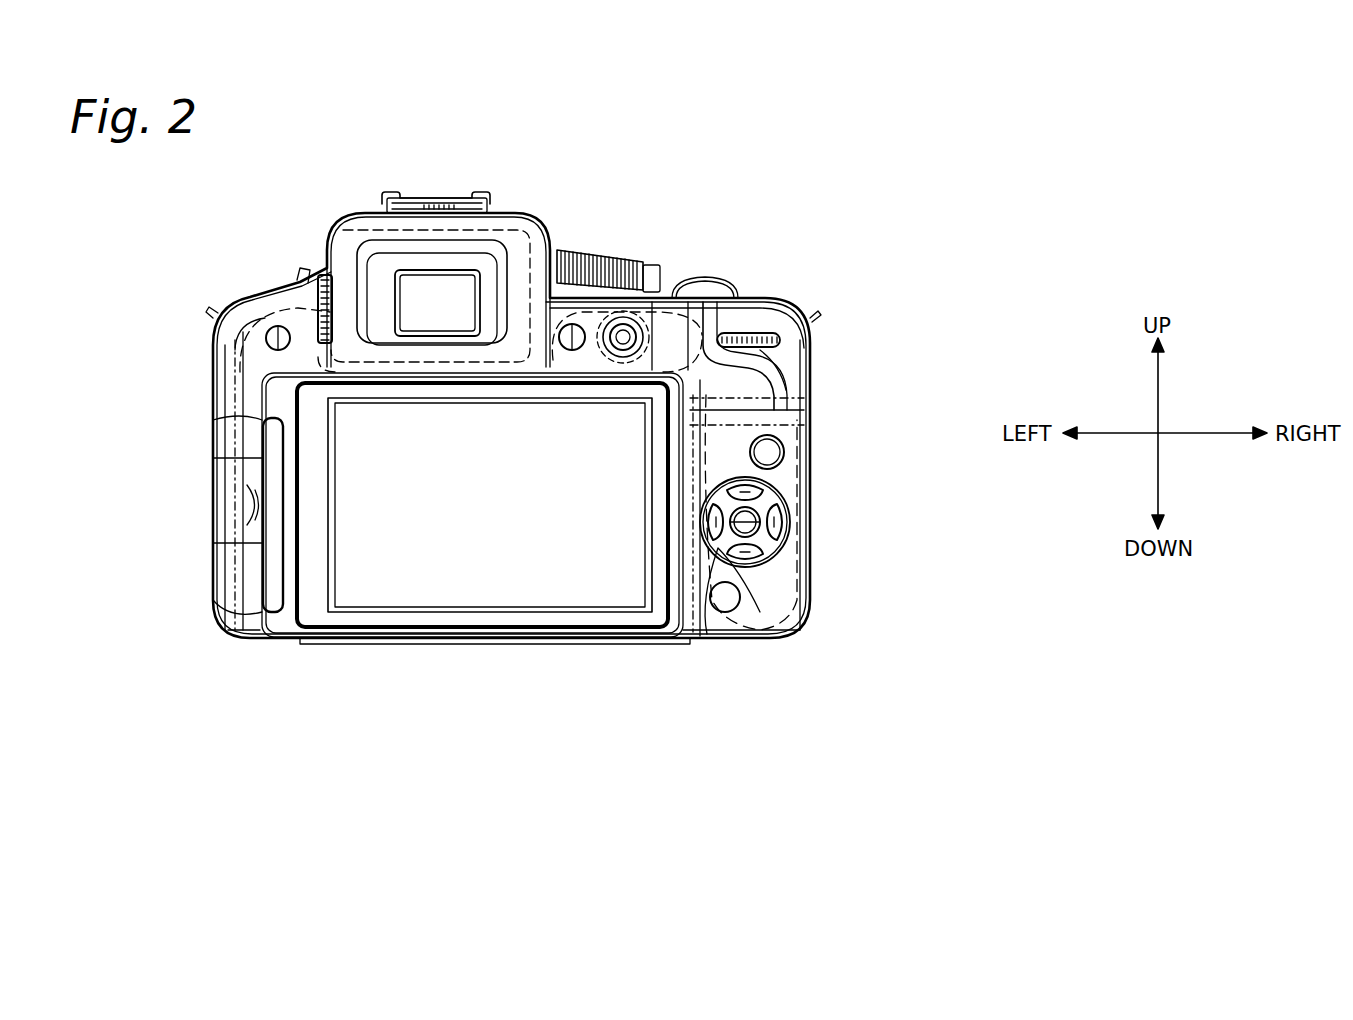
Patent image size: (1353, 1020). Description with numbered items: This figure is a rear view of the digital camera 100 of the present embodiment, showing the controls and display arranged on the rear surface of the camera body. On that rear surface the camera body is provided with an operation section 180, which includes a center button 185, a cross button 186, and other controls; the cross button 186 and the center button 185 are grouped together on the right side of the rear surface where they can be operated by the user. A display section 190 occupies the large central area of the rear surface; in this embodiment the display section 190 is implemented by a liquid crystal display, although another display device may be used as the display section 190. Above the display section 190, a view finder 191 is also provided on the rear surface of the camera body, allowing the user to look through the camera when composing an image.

The digital camera 100 is at (159, 219).
The operation section 180 is at (753, 623).
The center button 185 is at (757, 532).
The cross button 186 is at (750, 552).
The display section 190 is at (376, 580).
The view finder 191 is at (423, 300).